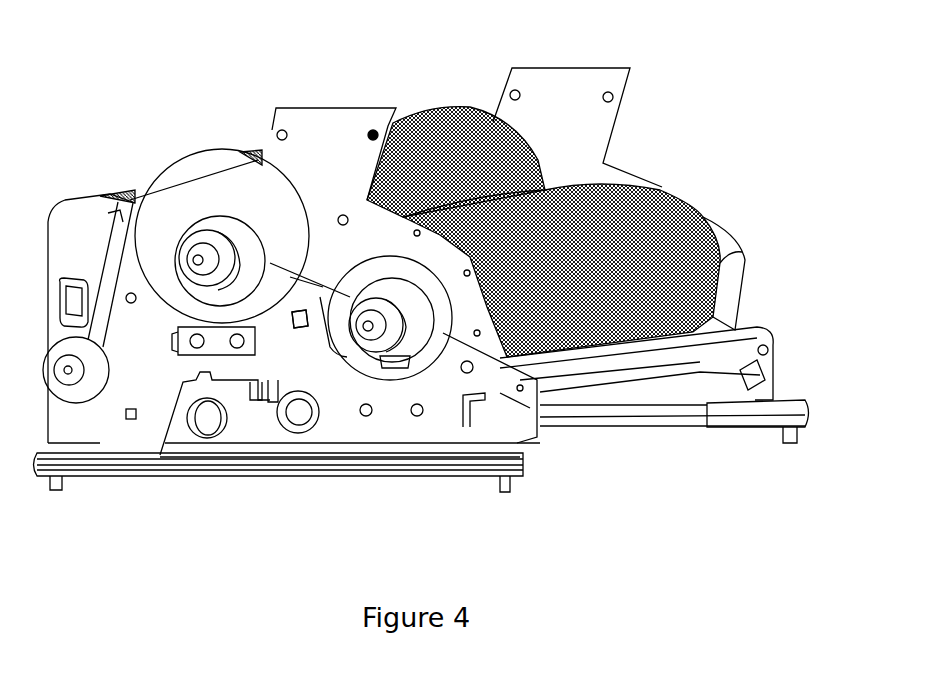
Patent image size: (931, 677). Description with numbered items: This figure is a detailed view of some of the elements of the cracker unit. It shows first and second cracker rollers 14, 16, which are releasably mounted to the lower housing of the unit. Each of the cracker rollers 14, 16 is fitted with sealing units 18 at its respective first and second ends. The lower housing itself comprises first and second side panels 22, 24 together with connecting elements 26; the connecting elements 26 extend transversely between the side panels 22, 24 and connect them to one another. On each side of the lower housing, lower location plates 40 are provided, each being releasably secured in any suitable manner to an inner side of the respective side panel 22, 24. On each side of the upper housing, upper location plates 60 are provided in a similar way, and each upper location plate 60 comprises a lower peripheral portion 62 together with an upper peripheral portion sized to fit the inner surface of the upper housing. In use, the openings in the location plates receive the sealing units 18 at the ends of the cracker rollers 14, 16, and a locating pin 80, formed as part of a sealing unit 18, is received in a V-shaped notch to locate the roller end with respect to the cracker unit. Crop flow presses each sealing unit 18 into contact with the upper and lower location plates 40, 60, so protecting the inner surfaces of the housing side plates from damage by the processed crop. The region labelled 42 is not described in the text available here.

The first cracker roller 14 is at (460, 165).
The second cracker roller 16 is at (630, 245).
The sealing unit 18 is at (233, 220).
The first side panel 22 is at (99, 423).
The second side panel 24 is at (757, 365).
The connecting elements 26 is at (613, 387).
The lower location plate 40 is at (343, 346).
The opening 42 is at (285, 309).
The upper location plate 60 is at (323, 130).
The lower peripheral portion 62 is at (298, 292).
The locating pin 80 is at (222, 305).